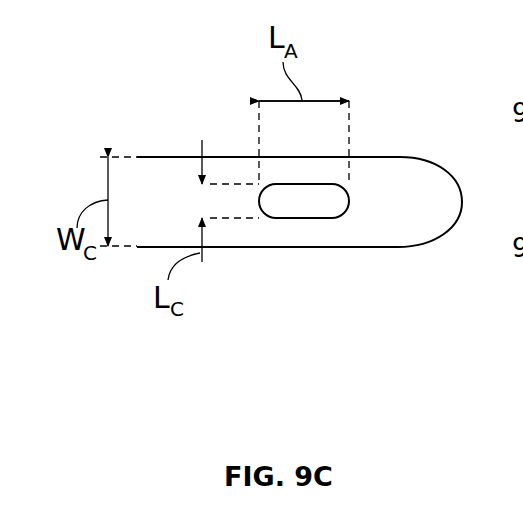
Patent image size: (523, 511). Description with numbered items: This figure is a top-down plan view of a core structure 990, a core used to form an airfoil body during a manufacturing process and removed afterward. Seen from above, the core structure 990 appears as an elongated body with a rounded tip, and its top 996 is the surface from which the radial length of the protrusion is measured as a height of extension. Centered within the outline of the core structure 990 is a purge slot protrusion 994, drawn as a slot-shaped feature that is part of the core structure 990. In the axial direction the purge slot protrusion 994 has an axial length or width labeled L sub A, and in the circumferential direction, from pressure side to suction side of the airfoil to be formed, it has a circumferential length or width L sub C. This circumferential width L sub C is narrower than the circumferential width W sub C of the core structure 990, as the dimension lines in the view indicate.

The core structure 990 is at (330, 183).
The purge slot protrusion 994 is at (303, 206).
The top of the core structure 996 is at (398, 172).